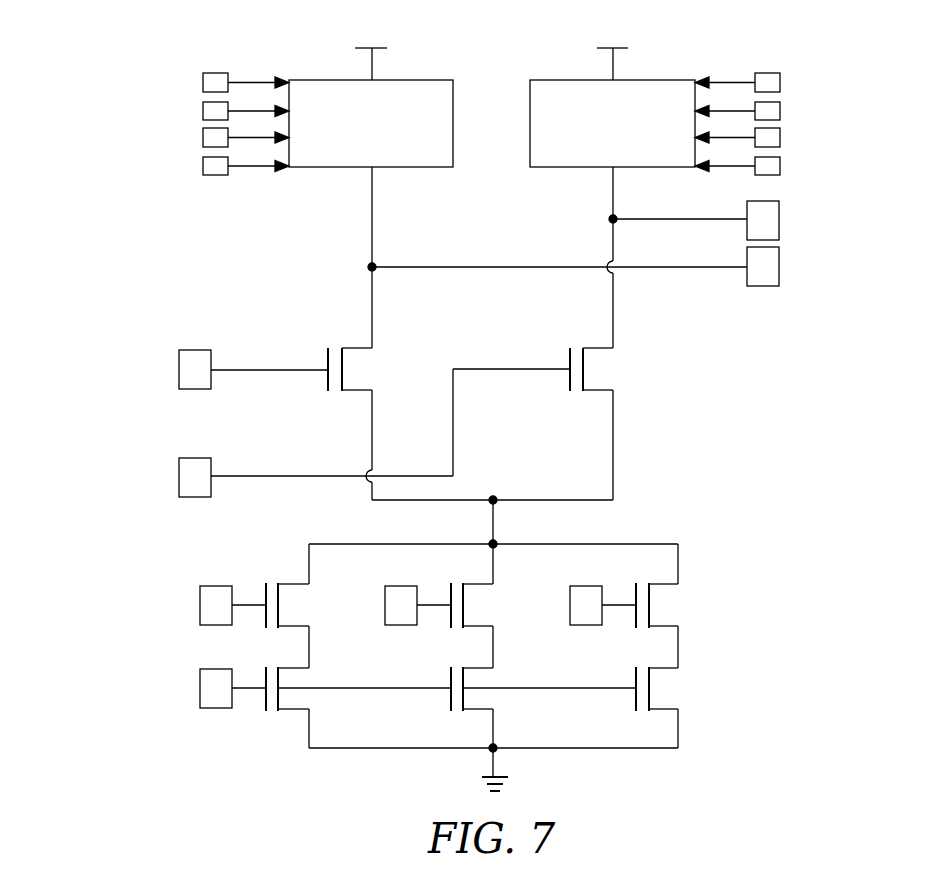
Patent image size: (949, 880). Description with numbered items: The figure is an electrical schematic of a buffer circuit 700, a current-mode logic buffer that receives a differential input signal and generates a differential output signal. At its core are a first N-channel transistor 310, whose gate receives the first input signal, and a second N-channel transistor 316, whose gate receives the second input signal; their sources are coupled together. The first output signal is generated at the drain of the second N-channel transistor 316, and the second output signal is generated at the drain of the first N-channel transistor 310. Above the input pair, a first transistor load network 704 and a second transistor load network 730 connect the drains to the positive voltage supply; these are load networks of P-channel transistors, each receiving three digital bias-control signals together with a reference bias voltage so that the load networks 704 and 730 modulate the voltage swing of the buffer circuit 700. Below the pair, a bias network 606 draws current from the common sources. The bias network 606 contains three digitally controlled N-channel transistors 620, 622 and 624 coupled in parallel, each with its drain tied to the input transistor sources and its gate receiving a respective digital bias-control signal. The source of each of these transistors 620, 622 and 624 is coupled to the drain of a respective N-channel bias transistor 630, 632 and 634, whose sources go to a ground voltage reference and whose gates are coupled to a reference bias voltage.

The buffer circuit 700 is at (870, 368).
The first transistor load network 704 is at (436, 80).
The second transistor load network 730 is at (656, 80).
The first N-channel transistor 310 is at (343, 369).
The second N-channel transistor 316 is at (584, 369).
The bias network 606 is at (737, 627).
The digitally controlled N-channel transistor 620 is at (279, 605).
The digitally controlled N-channel transistor 622 is at (464, 605).
The digitally controlled N-channel transistor 624 is at (650, 605).
The N-channel bias transistor 630 is at (313, 692).
The N-channel bias transistor 632 is at (498, 692).
The N-channel bias transistor 634 is at (650, 688).